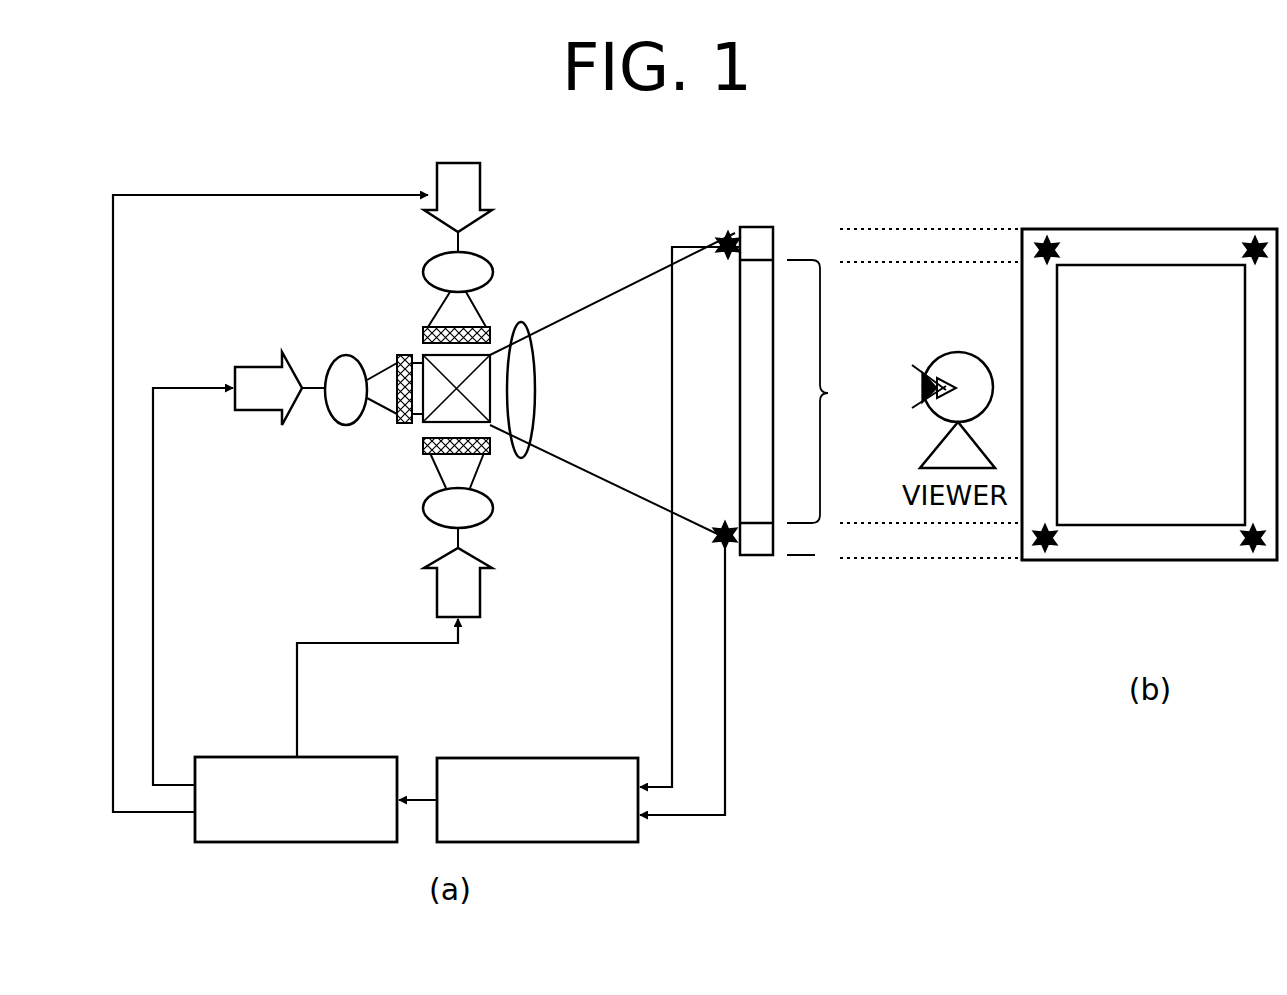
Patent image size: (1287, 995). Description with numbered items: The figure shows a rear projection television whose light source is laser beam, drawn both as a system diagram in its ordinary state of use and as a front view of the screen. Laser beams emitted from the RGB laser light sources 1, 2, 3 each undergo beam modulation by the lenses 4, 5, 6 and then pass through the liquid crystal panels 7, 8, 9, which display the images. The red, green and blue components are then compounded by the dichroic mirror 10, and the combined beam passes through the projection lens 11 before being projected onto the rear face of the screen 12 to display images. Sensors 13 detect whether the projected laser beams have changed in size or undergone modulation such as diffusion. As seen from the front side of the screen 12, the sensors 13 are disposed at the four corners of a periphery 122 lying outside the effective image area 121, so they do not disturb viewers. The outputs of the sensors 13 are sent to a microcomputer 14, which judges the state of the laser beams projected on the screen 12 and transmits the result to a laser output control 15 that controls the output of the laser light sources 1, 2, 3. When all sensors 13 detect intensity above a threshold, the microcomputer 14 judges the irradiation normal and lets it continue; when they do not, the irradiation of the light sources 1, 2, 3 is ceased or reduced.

The laser light source 1 is at (262, 367).
The laser light source 2 is at (482, 187).
The laser light source 3 is at (483, 590).
The lens 4 is at (347, 355).
The lens 5 is at (472, 258).
The lens 6 is at (492, 515).
The liquid crystal panel 7 is at (405, 355).
The liquid crystal panel 8 is at (492, 335).
The liquid crystal panel 9 is at (490, 450).
The dichroic mirror 10 is at (450, 410).
The projection lens 11 is at (537, 390).
The screen 12 is at (755, 365).
The sensors 13 is at (722, 237).
The microcomputer 14 is at (545, 757).
The laser output control 15 is at (255, 757).
The effective image area 121 is at (1165, 459).
The periphery 122 is at (822, 540).